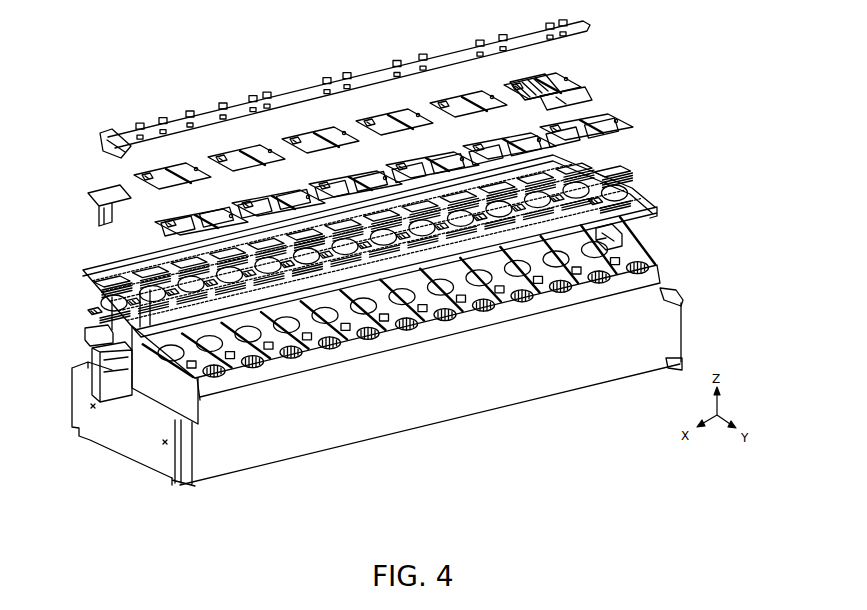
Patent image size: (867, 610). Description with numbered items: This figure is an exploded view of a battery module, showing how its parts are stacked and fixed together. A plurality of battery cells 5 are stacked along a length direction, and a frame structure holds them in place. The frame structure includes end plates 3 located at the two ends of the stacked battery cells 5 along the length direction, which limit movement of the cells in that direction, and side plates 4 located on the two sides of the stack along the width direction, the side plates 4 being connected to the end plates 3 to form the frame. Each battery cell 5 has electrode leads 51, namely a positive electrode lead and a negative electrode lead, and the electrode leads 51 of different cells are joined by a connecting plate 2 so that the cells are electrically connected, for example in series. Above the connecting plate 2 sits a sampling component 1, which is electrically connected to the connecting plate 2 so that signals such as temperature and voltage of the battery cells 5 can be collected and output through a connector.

The sampling component 1 is at (336, 84).
The connecting plate 2 is at (587, 141).
The end plate 3 is at (128, 455).
The side plate 4 is at (473, 412).
The battery cell 5 is at (693, 228).
The electrode lead 51 is at (638, 268).